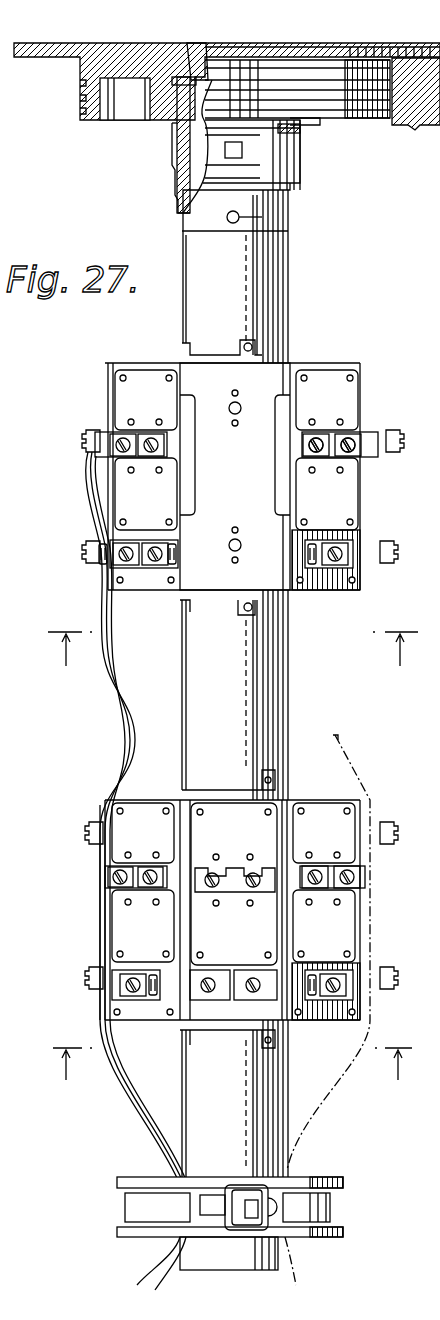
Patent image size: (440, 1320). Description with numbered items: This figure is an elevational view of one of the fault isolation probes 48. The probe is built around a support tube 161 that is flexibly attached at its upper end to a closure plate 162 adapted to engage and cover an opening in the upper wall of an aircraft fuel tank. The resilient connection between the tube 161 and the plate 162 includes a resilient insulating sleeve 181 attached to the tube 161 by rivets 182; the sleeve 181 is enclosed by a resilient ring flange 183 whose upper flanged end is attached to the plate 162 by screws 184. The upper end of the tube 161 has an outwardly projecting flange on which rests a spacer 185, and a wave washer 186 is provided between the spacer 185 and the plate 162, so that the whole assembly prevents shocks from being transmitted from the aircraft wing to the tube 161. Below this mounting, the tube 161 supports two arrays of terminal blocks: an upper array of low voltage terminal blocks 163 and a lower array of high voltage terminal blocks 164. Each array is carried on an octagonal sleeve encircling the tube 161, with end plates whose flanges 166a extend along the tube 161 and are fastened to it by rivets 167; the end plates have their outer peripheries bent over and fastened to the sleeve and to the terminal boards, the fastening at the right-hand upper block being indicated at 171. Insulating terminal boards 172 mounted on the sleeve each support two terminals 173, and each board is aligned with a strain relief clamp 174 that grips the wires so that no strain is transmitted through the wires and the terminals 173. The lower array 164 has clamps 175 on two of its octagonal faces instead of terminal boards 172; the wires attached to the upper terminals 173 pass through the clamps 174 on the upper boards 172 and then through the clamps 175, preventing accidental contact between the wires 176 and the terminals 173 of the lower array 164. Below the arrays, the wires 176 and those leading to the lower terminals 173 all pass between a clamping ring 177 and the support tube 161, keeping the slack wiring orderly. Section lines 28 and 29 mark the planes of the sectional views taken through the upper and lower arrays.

The closure plate 162 is at (130, 43).
The wave washer 186 is at (196, 44).
The spacer 185 is at (207, 82).
The resilient ring flange 183 is at (176, 135).
The resilient insulating sleeve 181 is at (176, 157).
The screws 184 is at (300, 128).
The rivets 182 is at (240, 217).
The support tube 161 is at (262, 262).
The fault isolation probe 48 is at (350, 296).
The flanges 166a is at (272, 352).
The rivets 167 is at (238, 344).
The right terminal block 171 is at (340, 370).
The insulating terminal boards 172 is at (130, 403).
The terminals 173 is at (348, 452).
The strain relief clamp 174 is at (120, 562).
The low voltage terminal blocks 163 is at (66, 495).
The section line 28- 28 is at (220, 649).
The wires 176 is at (348, 766).
The high voltage terminal blocks 164 is at (70, 947).
The clamps 175 is at (96, 830).
The section line 29- 29 is at (230, 1067).
The clamping ring 177 is at (316, 1178).